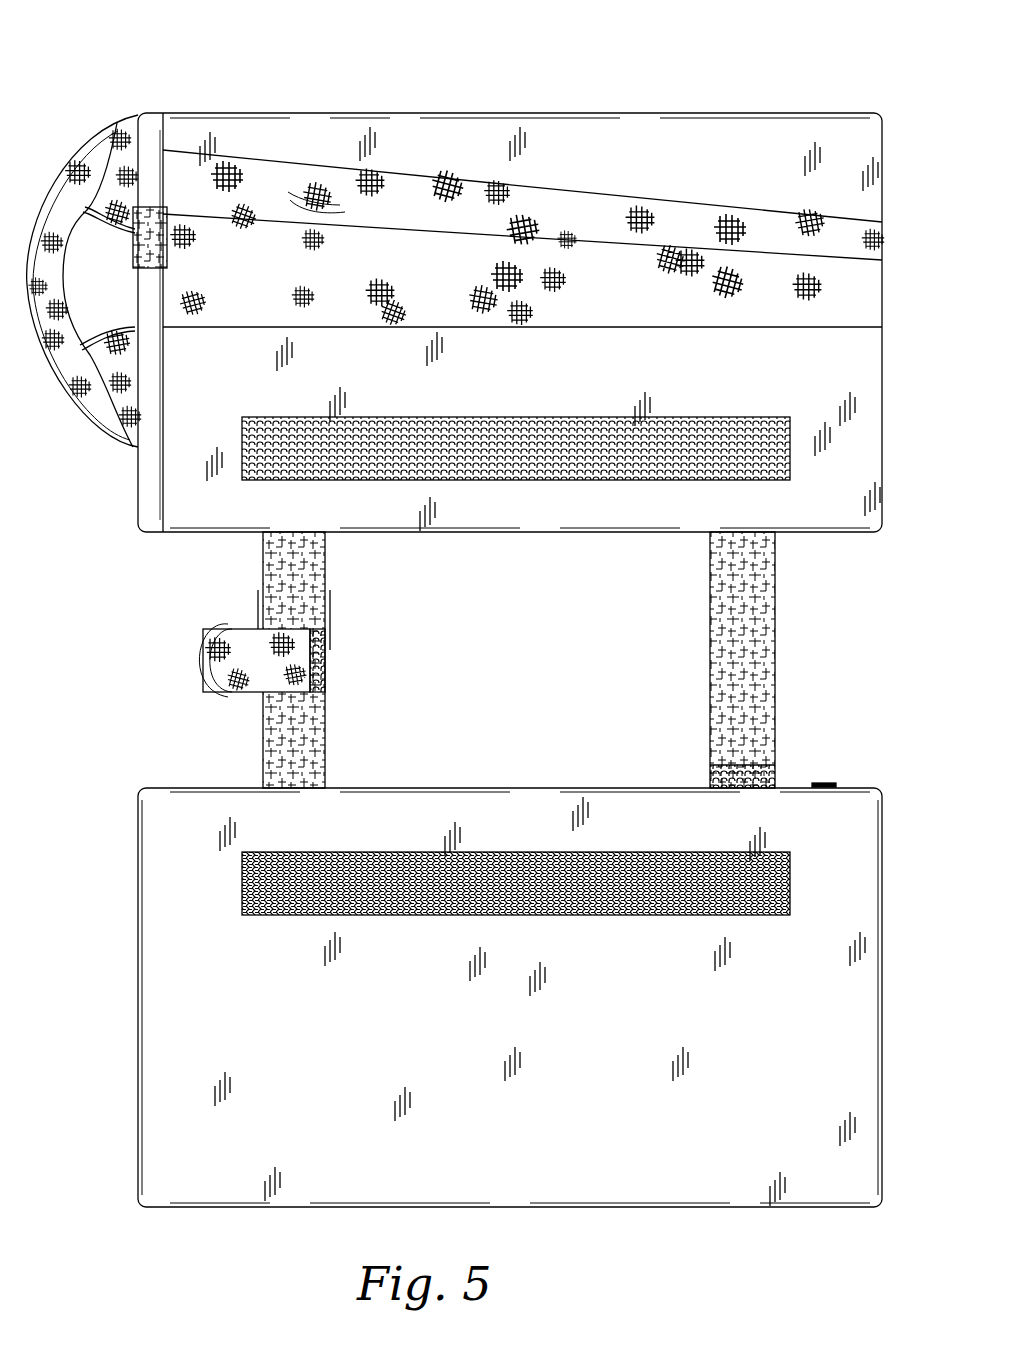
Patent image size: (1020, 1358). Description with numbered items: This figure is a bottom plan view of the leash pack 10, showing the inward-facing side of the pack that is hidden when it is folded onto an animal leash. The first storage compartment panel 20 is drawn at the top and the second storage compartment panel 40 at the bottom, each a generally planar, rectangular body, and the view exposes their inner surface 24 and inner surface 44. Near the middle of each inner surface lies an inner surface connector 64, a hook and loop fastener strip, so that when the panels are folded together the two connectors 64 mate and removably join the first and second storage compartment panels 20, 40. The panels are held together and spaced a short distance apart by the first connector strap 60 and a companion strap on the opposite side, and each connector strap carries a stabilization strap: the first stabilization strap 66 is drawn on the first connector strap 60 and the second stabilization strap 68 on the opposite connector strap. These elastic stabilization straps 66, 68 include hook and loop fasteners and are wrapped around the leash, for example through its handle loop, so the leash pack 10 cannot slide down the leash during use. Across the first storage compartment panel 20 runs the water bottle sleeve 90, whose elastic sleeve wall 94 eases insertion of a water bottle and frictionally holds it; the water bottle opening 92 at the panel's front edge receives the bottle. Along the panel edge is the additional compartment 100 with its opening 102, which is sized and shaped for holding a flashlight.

The leash pack 10 is at (822, 62).
The first storage compartment panel 20 is at (607, 148).
The inner surface 24 is at (606, 389).
The second storage compartment panel 40 is at (872, 928).
The inner surface 44 is at (644, 1057).
The first connector strap 60 is at (315, 720).
The inner surface connector 64 is at (548, 480).
The first stabilization strap 66 is at (325, 672).
The second stabilization strap 68 is at (758, 653).
The water bottle sleeve 90 is at (523, 198).
The sleeve wall 94 is at (405, 185).
The water bottle opening 92 is at (152, 150).
The additional compartment 100 is at (185, 507).
The opening 102 is at (163, 478).